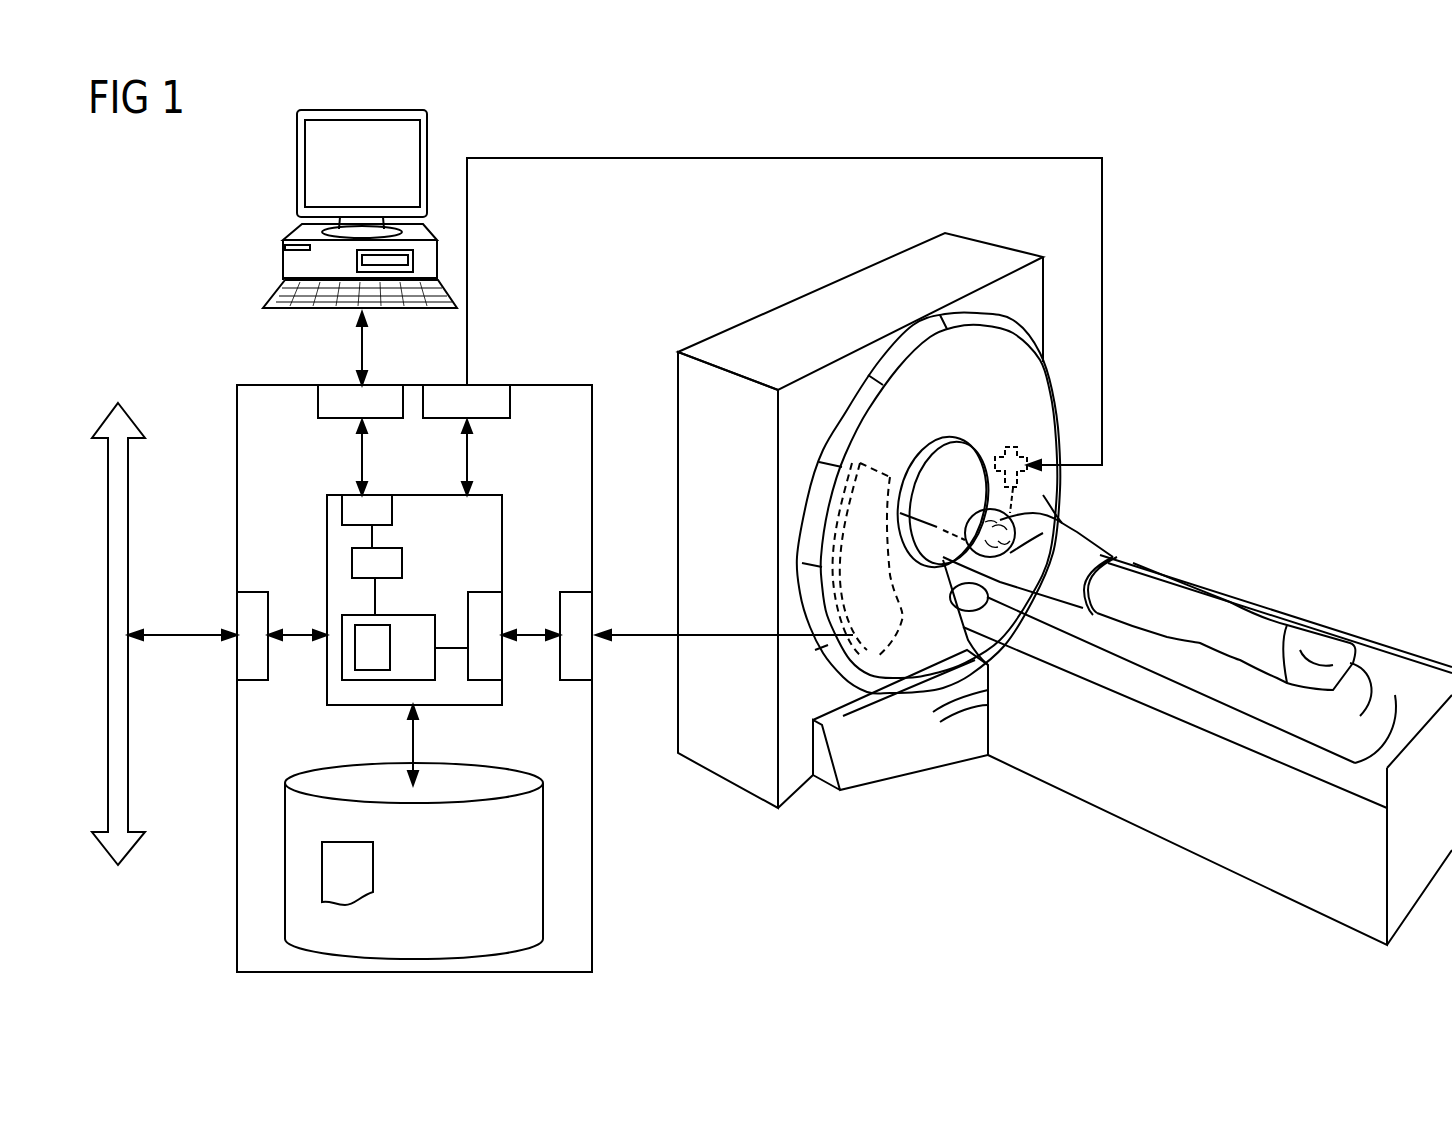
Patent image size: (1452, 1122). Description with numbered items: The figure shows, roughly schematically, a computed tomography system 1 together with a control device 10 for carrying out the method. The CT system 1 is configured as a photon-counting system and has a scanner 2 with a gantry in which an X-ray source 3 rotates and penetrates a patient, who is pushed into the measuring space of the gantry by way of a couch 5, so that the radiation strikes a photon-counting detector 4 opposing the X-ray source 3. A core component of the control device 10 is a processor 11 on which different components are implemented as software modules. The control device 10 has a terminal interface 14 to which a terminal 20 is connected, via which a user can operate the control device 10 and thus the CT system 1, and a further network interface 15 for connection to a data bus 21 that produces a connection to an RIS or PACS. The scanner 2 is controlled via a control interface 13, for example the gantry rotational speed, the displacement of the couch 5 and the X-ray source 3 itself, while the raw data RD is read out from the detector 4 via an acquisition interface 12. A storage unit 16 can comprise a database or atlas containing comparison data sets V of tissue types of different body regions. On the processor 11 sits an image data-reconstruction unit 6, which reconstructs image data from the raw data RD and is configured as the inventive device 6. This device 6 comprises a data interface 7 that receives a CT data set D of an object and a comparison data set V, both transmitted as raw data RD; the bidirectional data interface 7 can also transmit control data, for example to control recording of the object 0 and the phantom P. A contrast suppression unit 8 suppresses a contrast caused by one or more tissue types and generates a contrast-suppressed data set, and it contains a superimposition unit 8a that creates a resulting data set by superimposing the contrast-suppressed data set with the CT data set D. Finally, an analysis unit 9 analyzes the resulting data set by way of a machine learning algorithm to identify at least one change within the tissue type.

The computed tomography system 1 is at (1297, 360).
The scanner 2 is at (820, 300).
The X-ray source 3 is at (1015, 447).
The detector 4 is at (877, 622).
The couch 5 is at (1180, 840).
The image data-reconstruction unit 6 is at (502, 521).
The data interface 7 is at (392, 512).
The contrast suppression unit 8 is at (412, 620).
The superimposition unit 8a is at (372, 680).
The analysis unit 9 is at (352, 563).
The control device 10 is at (572, 386).
The processor 11 is at (395, 497).
The acquisition interface 12 is at (577, 596).
The control interface 13 is at (510, 406).
The terminal interface 14 is at (318, 402).
The network interface 15 is at (252, 596).
The storage unit 16 is at (510, 780).
The terminal 20 is at (297, 160).
The data bus 21 is at (128, 550).
The object 0 is at (1060, 517).
The comparison data set V is at (373, 862).
The CT data set D is at (633, 635).
The raw data RD is at (660, 637).
The phantom P is at (969, 611).